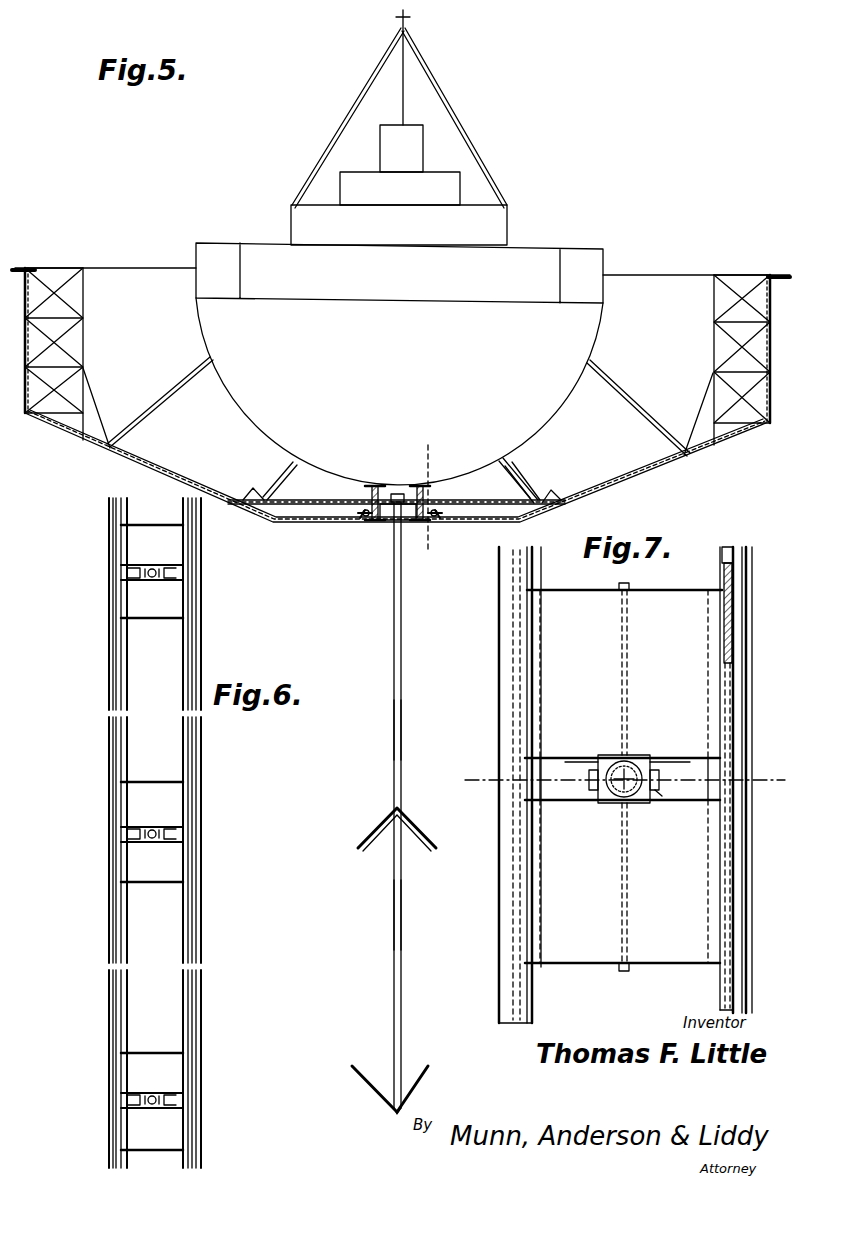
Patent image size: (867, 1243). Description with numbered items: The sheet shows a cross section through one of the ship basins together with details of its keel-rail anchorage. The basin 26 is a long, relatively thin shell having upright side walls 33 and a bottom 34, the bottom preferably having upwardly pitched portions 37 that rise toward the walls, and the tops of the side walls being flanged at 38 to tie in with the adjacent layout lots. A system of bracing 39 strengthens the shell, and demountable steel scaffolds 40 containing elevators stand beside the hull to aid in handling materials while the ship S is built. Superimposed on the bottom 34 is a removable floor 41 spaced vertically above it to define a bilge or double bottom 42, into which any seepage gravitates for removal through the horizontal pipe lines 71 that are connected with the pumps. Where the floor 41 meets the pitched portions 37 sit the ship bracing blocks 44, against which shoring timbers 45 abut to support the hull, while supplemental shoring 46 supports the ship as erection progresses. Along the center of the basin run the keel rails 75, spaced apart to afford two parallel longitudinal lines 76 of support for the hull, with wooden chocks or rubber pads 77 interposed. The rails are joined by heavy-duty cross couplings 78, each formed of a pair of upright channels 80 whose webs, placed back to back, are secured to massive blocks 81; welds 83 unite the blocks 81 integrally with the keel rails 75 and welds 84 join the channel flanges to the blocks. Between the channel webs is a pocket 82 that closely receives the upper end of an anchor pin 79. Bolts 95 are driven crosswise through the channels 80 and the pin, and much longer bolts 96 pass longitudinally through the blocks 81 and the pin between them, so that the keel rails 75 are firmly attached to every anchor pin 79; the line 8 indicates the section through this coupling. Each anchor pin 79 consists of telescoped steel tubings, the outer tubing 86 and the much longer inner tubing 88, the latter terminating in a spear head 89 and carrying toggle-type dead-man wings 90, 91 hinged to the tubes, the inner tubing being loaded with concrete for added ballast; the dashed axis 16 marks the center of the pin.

In FIG. 5, the ship S is at (588, 327).
In FIG. 5, the basin 26 is at (136, 264).
In FIG. 5, the flange 38 is at (779, 275).
In FIG. 5, the demountable steel scaffold 40 is at (83, 330).
In FIG. 5, the side wall 33 is at (25, 360).
In FIG. 5, the upwardly pitched portion 37 is at (124, 461).
In FIG. 5, the bottom 34 is at (312, 528).
In FIG. 5, the supplemental shoring 46 is at (175, 400).
In FIG. 5, the bracing 39 is at (83, 392).
In FIG. 5, the shoring timber 45 is at (275, 477).
In FIG. 5, the floor 41 is at (510, 490).
In FIG. 5, the bilge 42 is at (520, 503).
In FIG. 5, the ship bracing block 44 is at (250, 490).
In FIG. 5, the wooden chock or rubber pad 77 is at (373, 486).
In FIG. 5, the horizontal pipe line 71 is at (366, 520).
In FIG. 5, the keel rail 75 is at (377, 525).
In FIG. 6, the keel rail 75 is at (108, 630).
In FIG. 7, the keel rail 75 is at (740, 592).
In FIG. 5, the axis line 16 is at (429, 505).
In FIG. 5, the anchor pin 79 is at (384, 582).
In FIG. 6, the anchor pin 79 is at (143, 831).
In FIG. 5, the tubing 86 is at (393, 728).
In FIG. 5, the tubing 88 is at (393, 916).
In FIG. 5, the wing 90 is at (360, 842).
In FIG. 5, the wing 91 is at (357, 1064).
In FIG. 5, the spear head 89 is at (393, 1111).
In FIG. 6, the cross coupling 78 is at (129, 801).
In FIG. 7, the bolt 96 is at (623, 587).
In FIG. 7, the weld 83 is at (530, 590).
In FIG. 7, the block 81 is at (552, 663).
In FIG. 7, the line of support 76 is at (544, 763).
In FIG. 7, the pocket 82 is at (610, 756).
In FIG. 7, the upright channel 80 is at (588, 758).
In FIG. 7, the weld 84 is at (652, 766).
In FIG. 7, the bolt 95 is at (656, 795).
In FIG. 7, the section line 8 is at (622, 781).